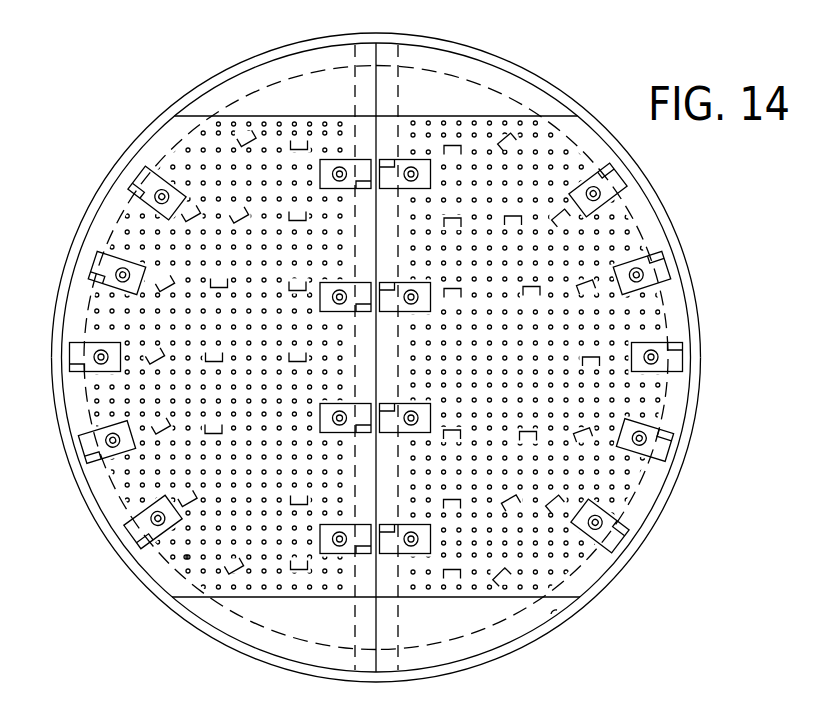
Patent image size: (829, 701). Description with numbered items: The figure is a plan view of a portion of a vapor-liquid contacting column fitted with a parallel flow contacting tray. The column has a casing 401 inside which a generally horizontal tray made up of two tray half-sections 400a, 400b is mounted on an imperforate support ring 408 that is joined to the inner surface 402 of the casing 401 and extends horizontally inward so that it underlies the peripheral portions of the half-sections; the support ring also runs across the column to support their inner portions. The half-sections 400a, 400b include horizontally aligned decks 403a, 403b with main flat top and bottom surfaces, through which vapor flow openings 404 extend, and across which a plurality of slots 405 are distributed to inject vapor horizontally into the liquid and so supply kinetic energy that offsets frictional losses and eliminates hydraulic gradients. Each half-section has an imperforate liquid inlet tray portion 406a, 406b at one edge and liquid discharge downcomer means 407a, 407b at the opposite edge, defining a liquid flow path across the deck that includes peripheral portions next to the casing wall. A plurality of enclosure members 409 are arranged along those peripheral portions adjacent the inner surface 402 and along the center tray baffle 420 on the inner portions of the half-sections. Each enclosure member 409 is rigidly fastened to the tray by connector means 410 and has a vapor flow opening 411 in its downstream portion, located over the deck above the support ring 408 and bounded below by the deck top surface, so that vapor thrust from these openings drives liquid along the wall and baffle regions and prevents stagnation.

The tray half-section 400a is at (647, 322).
The tray half-section 400b is at (127, 493).
The casing 401 is at (552, 90).
The inner surface of the casing 402 is at (570, 608).
The deck 403a is at (627, 240).
The deck 403b is at (93, 207).
The vapor flow openings 404 is at (184, 561).
The slots 405 is at (150, 352).
The imperforate liquid inlet tray portion 406a is at (477, 628).
The imperforate liquid inlet tray portion 406b is at (281, 55).
The liquid discharge downcomer means 407a is at (452, 50).
The liquid discharge downcomer means 407b is at (265, 647).
The imperforate support ring 408 is at (612, 577).
The enclosure members 409 is at (92, 275).
The connector means 410 is at (97, 430).
The vapor flow opening 411 is at (85, 469).
The center tray baffle 420 is at (377, 148).